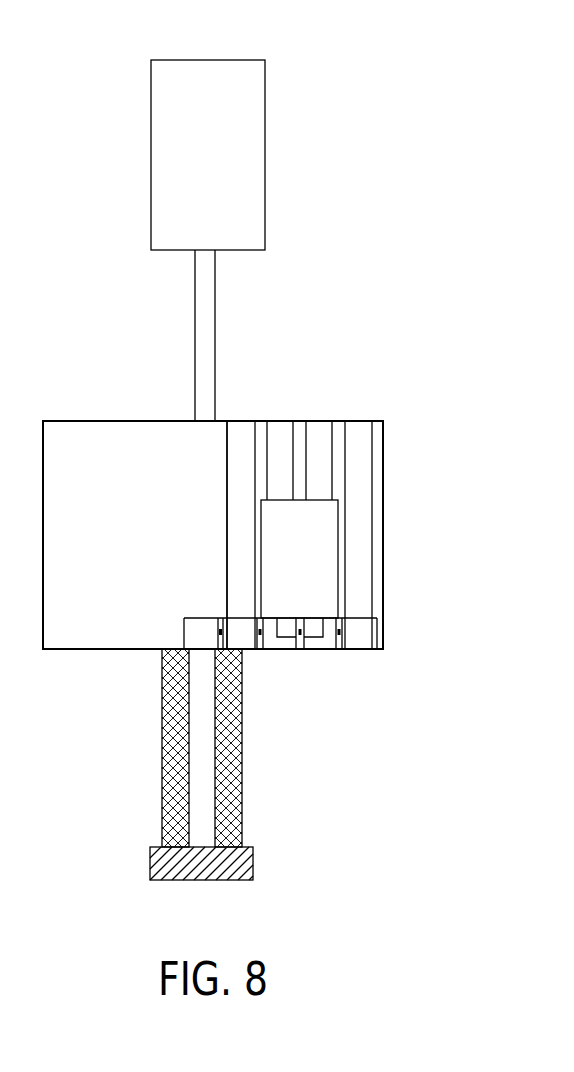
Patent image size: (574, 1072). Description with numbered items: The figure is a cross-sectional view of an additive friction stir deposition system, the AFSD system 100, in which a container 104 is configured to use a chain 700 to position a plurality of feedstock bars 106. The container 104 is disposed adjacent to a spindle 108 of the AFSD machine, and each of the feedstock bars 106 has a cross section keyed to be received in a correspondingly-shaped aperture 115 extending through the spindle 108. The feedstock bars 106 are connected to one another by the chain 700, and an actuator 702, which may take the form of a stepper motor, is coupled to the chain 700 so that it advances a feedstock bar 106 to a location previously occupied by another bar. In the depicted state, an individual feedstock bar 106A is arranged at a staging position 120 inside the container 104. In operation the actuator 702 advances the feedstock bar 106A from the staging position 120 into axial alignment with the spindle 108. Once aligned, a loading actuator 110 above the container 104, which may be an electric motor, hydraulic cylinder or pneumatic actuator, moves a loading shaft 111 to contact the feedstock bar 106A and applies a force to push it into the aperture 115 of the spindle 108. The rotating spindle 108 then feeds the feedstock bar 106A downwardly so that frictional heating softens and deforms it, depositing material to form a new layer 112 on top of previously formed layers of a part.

The AFSD system 100 is at (342, 55).
The container 104 is at (385, 475).
The feedstock bars 106 is at (364, 432).
The feedstock bar 106A is at (225, 568).
The spindle 108 is at (162, 802).
The loading actuator 110 is at (125, 283).
The loading shaft 111 is at (215, 330).
The new layer 112 is at (253, 858).
The aperture 115 is at (190, 670).
The staging position 120 is at (215, 488).
The chain 700 is at (302, 670).
The actuator 702 is at (338, 563).